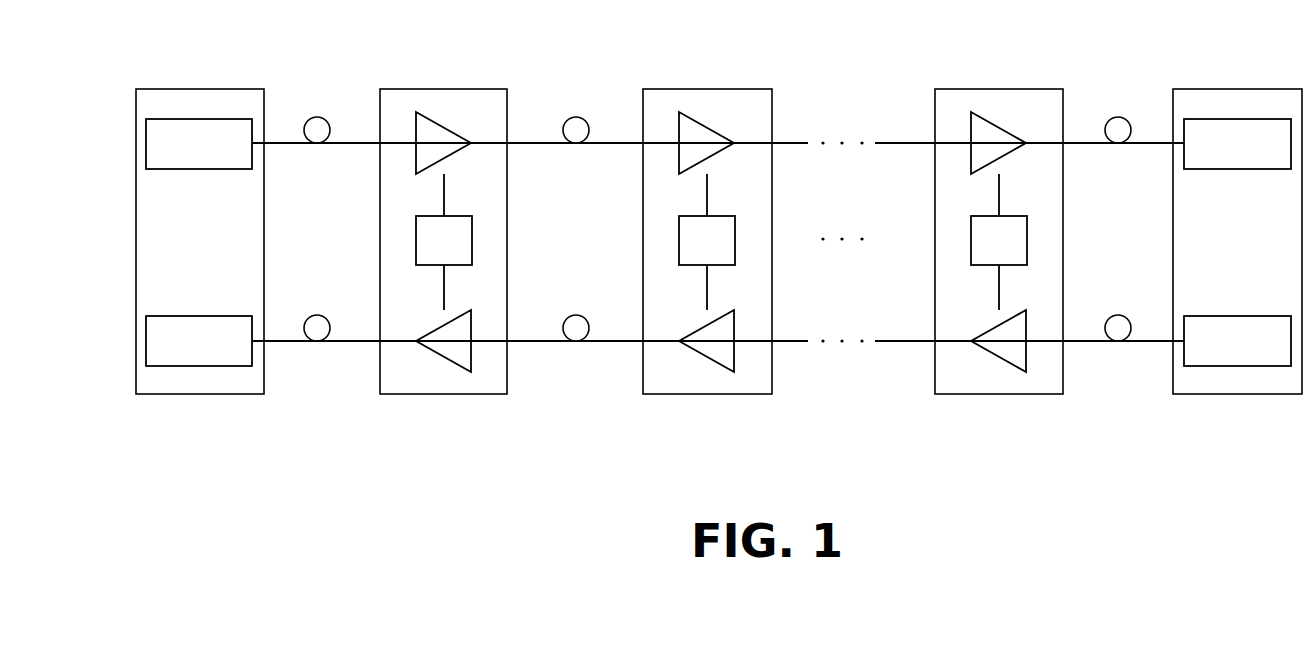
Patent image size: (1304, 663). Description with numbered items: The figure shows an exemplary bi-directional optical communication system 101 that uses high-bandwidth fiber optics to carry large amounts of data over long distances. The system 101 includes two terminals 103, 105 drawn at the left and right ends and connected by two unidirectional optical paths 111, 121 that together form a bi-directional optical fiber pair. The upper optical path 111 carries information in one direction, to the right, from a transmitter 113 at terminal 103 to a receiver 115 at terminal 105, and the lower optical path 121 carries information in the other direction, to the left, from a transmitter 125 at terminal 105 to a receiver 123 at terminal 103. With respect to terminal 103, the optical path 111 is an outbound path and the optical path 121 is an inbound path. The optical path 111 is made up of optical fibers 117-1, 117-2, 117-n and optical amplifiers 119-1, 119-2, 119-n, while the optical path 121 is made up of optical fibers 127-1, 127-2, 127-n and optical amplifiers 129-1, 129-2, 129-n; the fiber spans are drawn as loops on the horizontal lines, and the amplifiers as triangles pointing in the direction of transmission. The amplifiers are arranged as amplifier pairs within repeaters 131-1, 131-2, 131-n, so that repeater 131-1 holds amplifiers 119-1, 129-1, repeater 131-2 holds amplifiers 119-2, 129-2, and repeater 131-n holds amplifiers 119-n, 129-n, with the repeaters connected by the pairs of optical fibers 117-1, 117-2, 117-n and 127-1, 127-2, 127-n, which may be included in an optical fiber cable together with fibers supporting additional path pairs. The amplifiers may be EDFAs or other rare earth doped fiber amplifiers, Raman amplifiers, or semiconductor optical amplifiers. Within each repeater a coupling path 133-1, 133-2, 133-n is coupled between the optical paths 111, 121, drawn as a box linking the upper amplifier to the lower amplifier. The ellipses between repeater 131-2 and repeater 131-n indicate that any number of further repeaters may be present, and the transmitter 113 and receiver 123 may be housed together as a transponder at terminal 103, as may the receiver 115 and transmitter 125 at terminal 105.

The optical communication system 101 is at (795, 498).
The terminal 103 is at (200, 241).
The terminal 105 is at (1237, 241).
The optical path 111 is at (568, 56).
The transmitter 113 is at (199, 144).
The receiver 115 is at (1237, 144).
The optical fiber 117-1 is at (293, 145).
The optical fiber 117-2 is at (541, 145).
The optical fiber 117-n is at (1086, 145).
The optical amplifier 119-1 is at (443, 143).
The optical amplifier 119-2 is at (706, 143).
The optical amplifier 119-n is at (998, 143).
The optical path 121 is at (562, 434).
The receiver 123 is at (199, 341).
The transmitter 125 is at (1237, 341).
The optical fiber 127-1 is at (302, 343).
The optical fiber 127-2 is at (541, 343).
The optical fiber 127-n is at (1086, 343).
The optical amplifier 129-1 is at (443, 341).
The optical amplifier 129-2 is at (706, 341).
The optical amplifier 129-n is at (998, 341).
The repeater 131-1 is at (443, 241).
The repeater 131-2 is at (707, 241).
The repeater 131-n is at (999, 241).
The coupling path 133-1 is at (444, 242).
The coupling path 133-2 is at (707, 242).
The coupling path 133-n is at (999, 242).